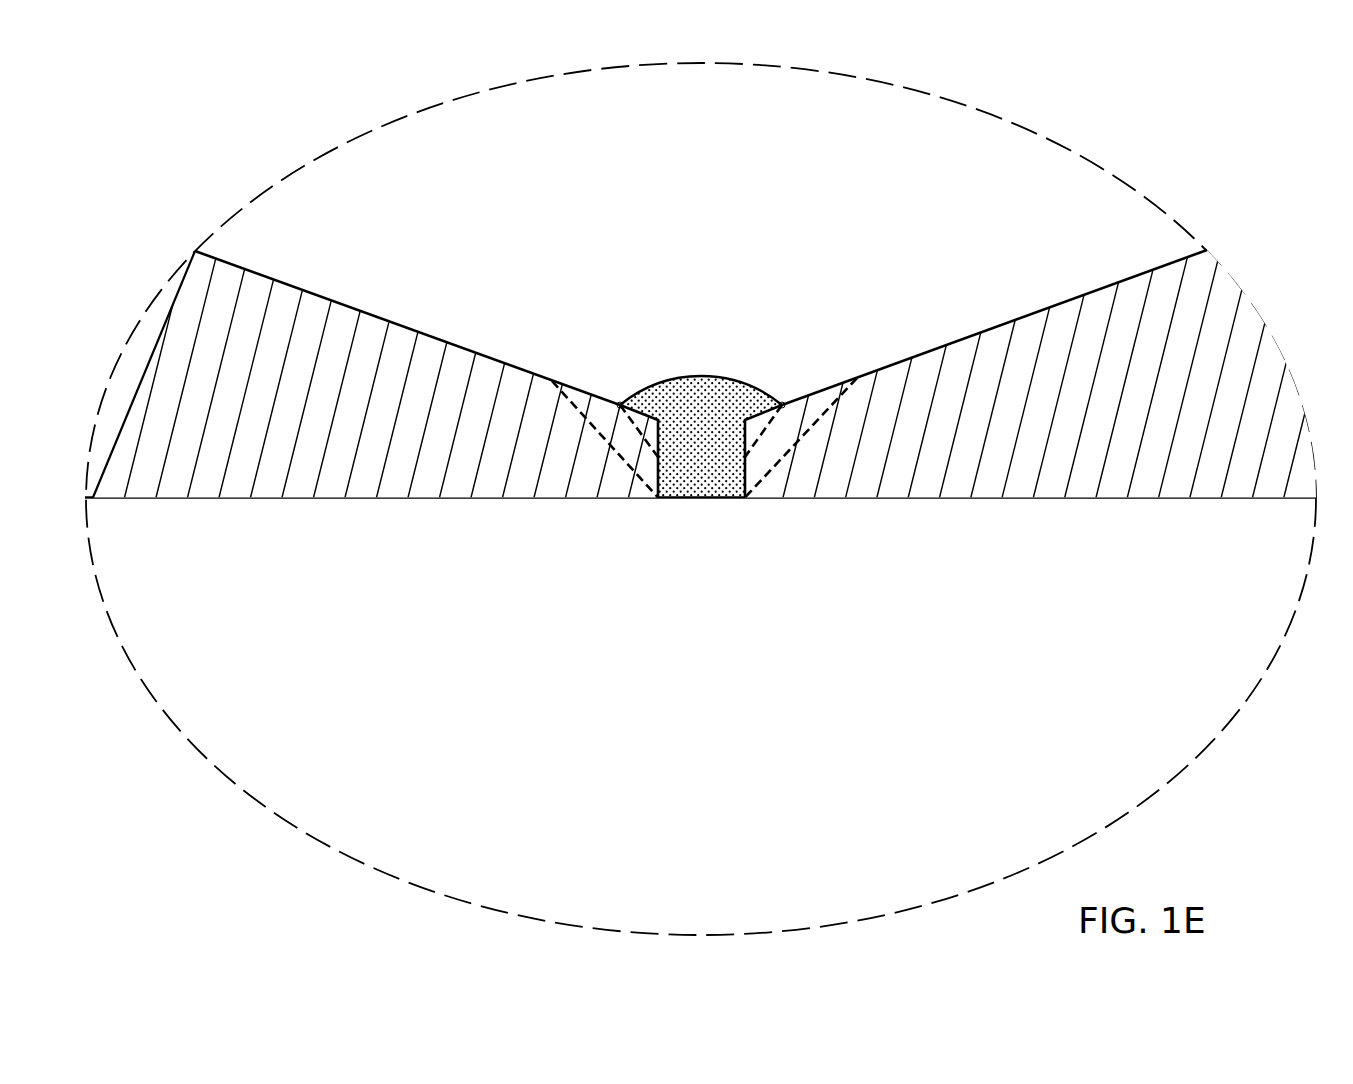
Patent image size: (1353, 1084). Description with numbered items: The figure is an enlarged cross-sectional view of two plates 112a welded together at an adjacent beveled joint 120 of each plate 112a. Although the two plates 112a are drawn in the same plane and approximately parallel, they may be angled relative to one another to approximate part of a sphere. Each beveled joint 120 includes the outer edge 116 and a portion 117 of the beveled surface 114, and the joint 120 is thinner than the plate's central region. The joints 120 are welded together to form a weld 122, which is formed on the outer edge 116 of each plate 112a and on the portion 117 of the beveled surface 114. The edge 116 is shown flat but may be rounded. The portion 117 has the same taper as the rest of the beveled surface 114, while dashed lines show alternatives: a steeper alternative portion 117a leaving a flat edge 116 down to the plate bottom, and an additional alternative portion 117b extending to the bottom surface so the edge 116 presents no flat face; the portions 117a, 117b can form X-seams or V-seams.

The plate 112a is at (255, 440).
The beveled surface 114 is at (343, 304).
The outer edge 116 is at (659, 498).
The portion of the beveled surface 117 is at (660, 379).
The alternative portion 117a is at (632, 425).
The additional alternative portion 117b is at (569, 408).
The beveled joint 120 is at (613, 376).
The weld 122 is at (748, 379).